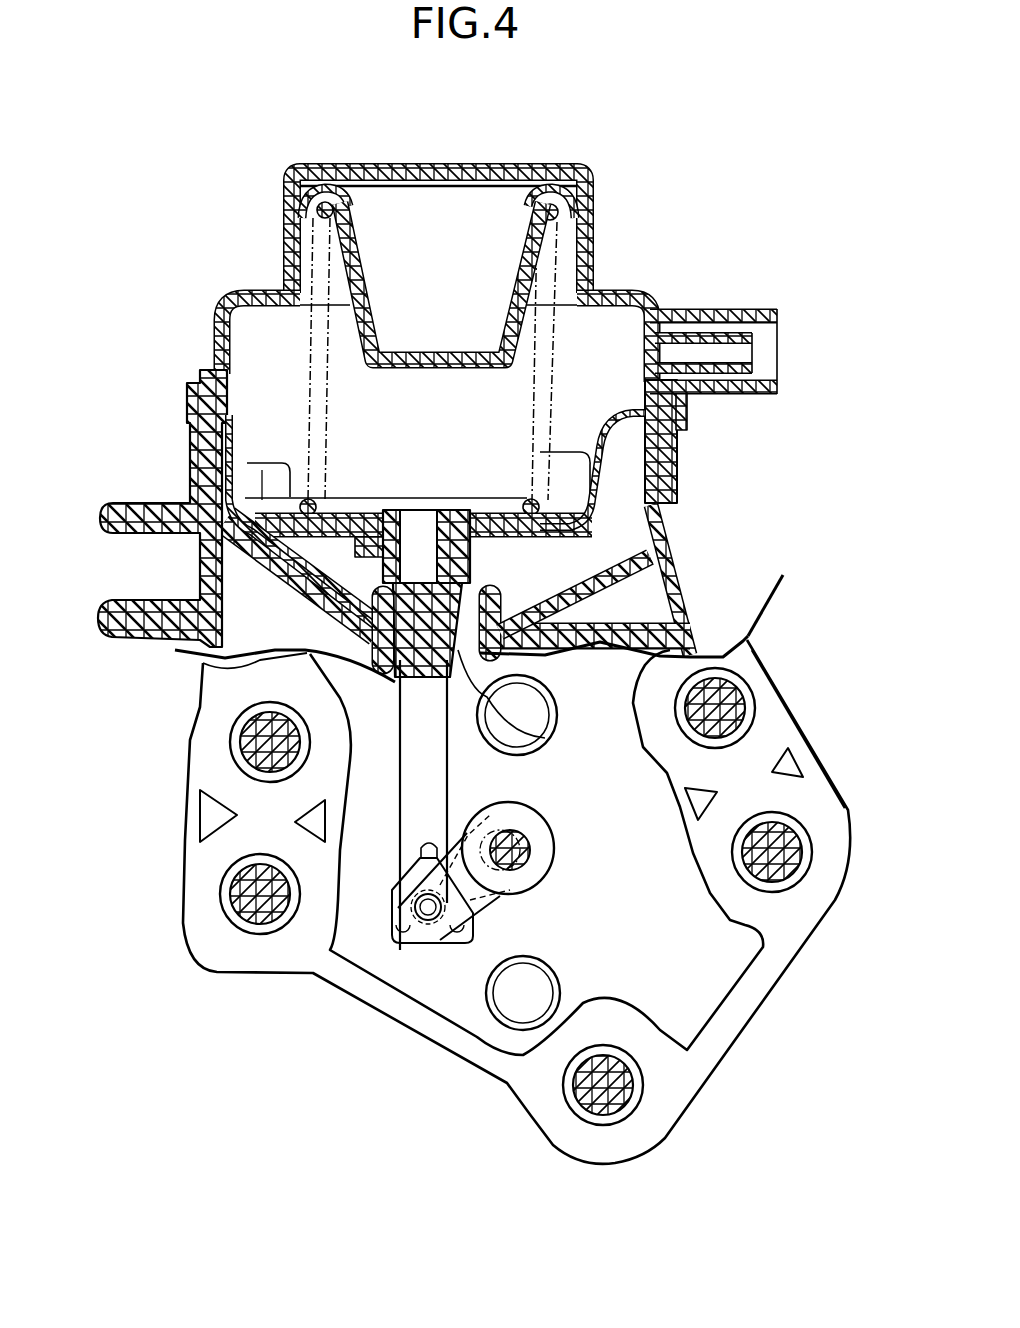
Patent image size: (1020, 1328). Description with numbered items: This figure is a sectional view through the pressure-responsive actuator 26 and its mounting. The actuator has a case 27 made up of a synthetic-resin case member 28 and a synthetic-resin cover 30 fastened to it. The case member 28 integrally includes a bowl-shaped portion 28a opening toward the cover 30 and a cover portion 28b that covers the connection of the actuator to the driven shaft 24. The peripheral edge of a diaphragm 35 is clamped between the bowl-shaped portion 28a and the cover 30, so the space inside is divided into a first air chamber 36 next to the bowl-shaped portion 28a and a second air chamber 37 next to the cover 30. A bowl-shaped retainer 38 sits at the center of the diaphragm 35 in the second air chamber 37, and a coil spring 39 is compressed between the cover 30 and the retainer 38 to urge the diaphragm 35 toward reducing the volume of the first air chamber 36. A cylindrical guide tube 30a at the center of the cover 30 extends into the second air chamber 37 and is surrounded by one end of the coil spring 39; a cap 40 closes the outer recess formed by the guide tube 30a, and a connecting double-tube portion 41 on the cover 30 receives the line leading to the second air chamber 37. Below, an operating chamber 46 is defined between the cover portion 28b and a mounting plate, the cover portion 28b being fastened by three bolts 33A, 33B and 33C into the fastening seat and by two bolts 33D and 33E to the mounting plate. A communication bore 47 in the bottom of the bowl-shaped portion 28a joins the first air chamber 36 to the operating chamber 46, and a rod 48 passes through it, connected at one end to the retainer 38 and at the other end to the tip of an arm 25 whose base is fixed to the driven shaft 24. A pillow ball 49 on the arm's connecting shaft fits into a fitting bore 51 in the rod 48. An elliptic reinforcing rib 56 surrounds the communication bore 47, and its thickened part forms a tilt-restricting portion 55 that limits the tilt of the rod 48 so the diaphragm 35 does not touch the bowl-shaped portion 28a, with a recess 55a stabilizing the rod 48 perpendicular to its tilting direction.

The driven shaft 24 is at (515, 848).
The arm 25 is at (490, 903).
The pressure-responsive actuator 26 is at (272, 257).
The case 27 is at (178, 482).
The case member 28 is at (692, 580).
The bowl-shaped portion 28a is at (650, 519).
The cover portion 28b is at (775, 725).
The cover 30 is at (610, 298).
The cylindrical guide tube 30a is at (385, 368).
The bolt 33A is at (690, 723).
The bolt 33B is at (590, 1097).
The bolt 33C is at (258, 895).
The bolt 33D is at (783, 863).
The bolt 33E is at (268, 740).
The diaphragm 35 is at (650, 490).
The first air chamber 36 is at (522, 582).
The second air chamber 37 is at (360, 452).
The bowl-shaped retainer 38 is at (547, 448).
The coil spring 39 is at (566, 210).
The cap 40 is at (452, 165).
The connecting double-tube portion 41 is at (710, 312).
The operating chamber 46 is at (645, 974).
The communication bore 47 is at (500, 720).
The rod 48 is at (433, 762).
The pillow ball 49 is at (440, 908).
The fitting bore 51 is at (425, 906).
The tilt-restricting portion 55 is at (378, 608).
The recess 55a is at (425, 560).
The reinforcing rib 56 is at (518, 692).